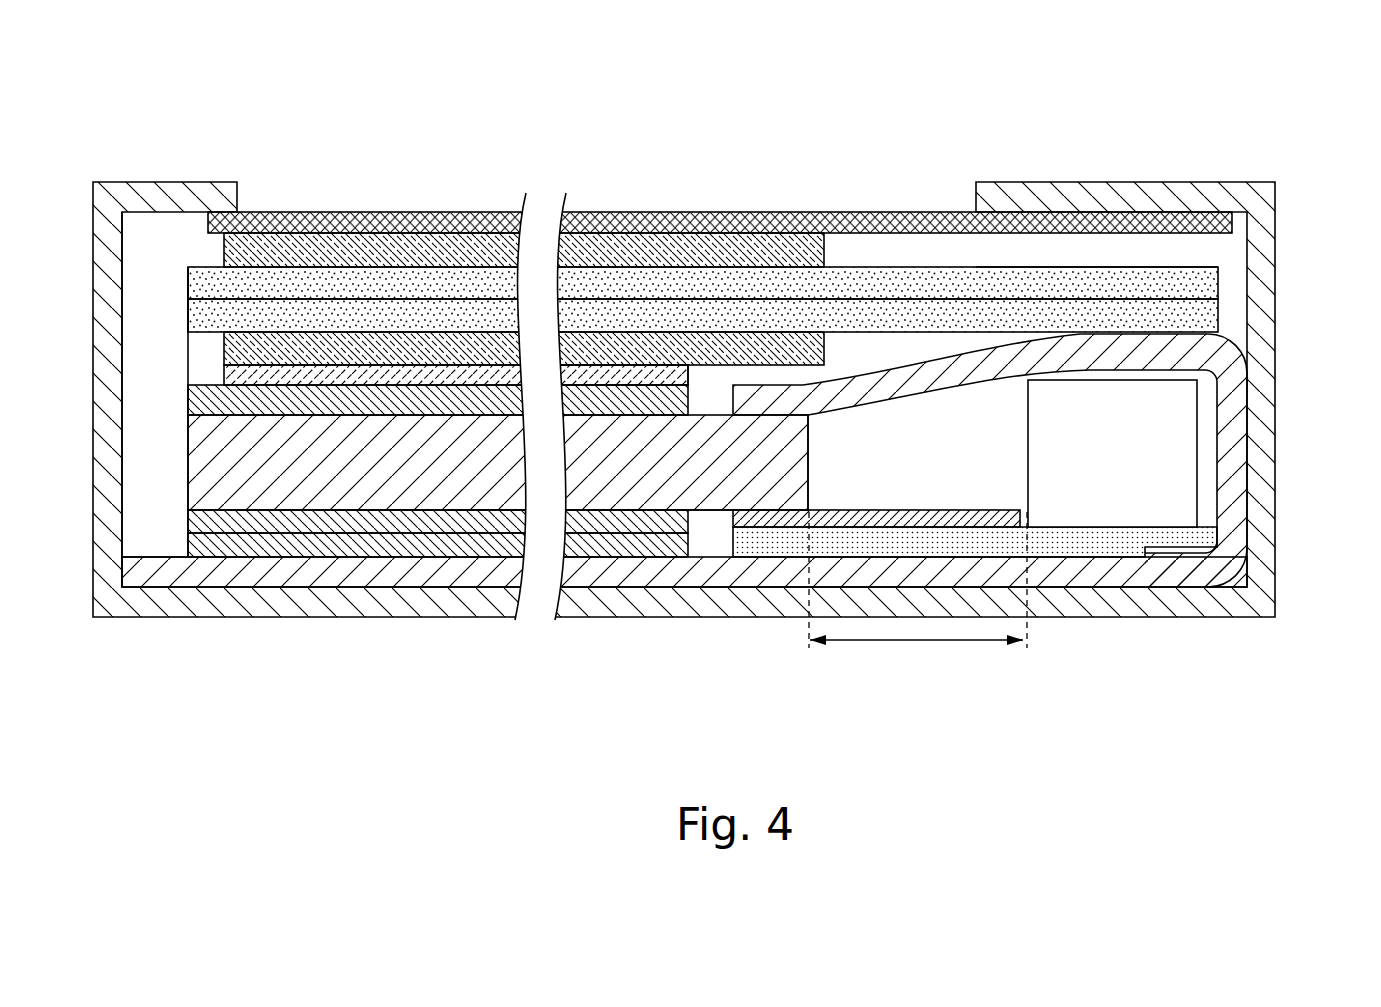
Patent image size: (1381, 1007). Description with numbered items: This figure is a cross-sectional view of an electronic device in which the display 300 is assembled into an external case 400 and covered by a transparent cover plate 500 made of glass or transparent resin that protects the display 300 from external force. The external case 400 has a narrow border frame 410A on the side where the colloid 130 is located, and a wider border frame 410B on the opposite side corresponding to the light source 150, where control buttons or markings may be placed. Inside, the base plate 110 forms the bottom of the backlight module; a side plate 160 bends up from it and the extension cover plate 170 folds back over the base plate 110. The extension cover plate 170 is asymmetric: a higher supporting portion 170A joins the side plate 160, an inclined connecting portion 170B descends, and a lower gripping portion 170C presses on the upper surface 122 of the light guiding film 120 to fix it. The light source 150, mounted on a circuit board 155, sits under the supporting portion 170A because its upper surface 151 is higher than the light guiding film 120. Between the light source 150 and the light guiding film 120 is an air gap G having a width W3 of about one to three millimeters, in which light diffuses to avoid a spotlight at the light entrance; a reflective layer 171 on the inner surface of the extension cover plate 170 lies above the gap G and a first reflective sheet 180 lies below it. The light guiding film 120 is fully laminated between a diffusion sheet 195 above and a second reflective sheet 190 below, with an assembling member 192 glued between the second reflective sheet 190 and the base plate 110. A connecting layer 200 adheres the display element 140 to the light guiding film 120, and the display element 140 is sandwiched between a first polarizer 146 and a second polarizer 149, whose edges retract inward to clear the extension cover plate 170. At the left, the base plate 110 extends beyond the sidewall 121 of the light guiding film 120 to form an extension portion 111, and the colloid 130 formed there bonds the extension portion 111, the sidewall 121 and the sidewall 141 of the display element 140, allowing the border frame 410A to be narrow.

The base plate 110 is at (639, 596).
The extension portion 111 is at (148, 556).
The light guiding film 120 is at (498, 540).
The sidewall of light guiding film 121 is at (210, 483).
The upper surface of light guiding film 122 is at (753, 395).
The colloid 130 is at (137, 383).
The display element 140 is at (703, 252).
The sidewall of display element 141 is at (191, 286).
The first polarizer 146 is at (622, 250).
The second polarizer 149 is at (703, 343).
The light source 150 is at (1182, 442).
The upper surface of light source 151 is at (1167, 373).
The circuit board 155 is at (1210, 533).
The side plate 160 is at (1232, 467).
The extension cover plate 170 is at (1044, 318).
The supporting portion 170A is at (1218, 339).
The connecting portion 170B is at (946, 253).
The gripping portion 170C is at (787, 397).
The reflective layer 171 is at (933, 392).
The first reflective sheet 180 is at (785, 518).
The second reflective sheet 190 is at (433, 525).
The assembling member 192 is at (493, 550).
The diffusion sheet 195 is at (596, 393).
The connecting layer 200 is at (470, 379).
The display 300 is at (993, 267).
The external case 400 is at (731, 349).
The border frame 410A is at (224, 192).
The border frame 410B is at (1236, 182).
The transparent cover plate 500 is at (333, 223).
The gap G is at (877, 431).
The width of gap W3 is at (915, 643).